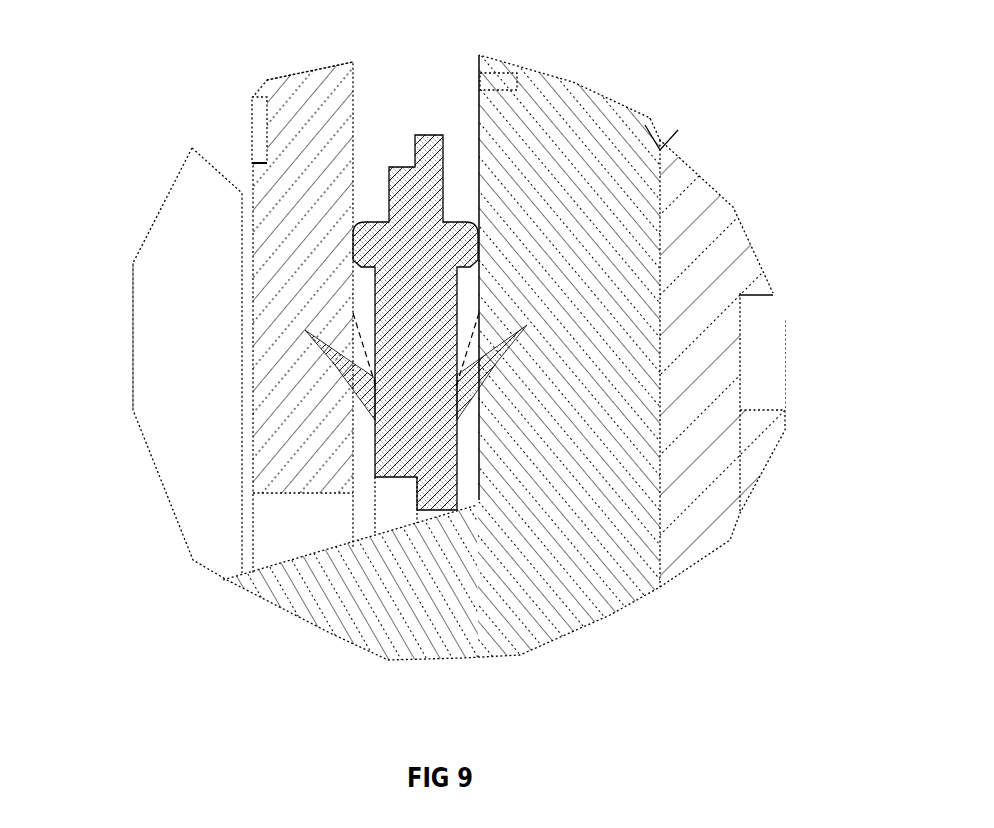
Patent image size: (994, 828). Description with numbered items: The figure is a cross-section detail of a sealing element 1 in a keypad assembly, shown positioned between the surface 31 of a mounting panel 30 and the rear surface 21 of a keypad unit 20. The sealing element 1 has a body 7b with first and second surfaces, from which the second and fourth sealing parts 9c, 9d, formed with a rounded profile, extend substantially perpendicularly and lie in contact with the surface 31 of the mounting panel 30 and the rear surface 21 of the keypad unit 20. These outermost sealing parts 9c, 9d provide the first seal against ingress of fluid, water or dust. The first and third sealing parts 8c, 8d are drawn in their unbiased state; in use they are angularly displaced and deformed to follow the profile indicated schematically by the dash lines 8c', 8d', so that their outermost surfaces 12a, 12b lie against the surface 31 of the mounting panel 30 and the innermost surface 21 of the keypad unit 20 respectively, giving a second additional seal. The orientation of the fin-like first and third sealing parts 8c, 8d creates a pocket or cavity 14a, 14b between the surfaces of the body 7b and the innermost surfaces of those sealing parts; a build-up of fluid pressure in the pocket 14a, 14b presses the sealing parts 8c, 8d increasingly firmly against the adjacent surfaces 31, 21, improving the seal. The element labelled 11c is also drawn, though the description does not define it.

The sealing element 1 is at (415, 268).
The body 7b is at (230, 287).
The first sealing part 8c is at (614, 447).
The dash line 8c' is at (636, 401).
The third sealing part 8d is at (223, 416).
The dash line 8d' is at (224, 372).
The second sealing part 9c is at (616, 190).
The fourth sealing part 9d is at (229, 207).
The bottom portion 11c is at (338, 604).
The outermost surface 12a is at (602, 533).
The outermost surface 12b is at (233, 502).
The pocket 14a is at (640, 260).
The pocket 14b is at (211, 341).
The keypad unit 20 is at (471, 346).
The rear surface 21 is at (632, 309).
The mounting panel 30 is at (245, 304).
The surface 31 is at (303, 59).